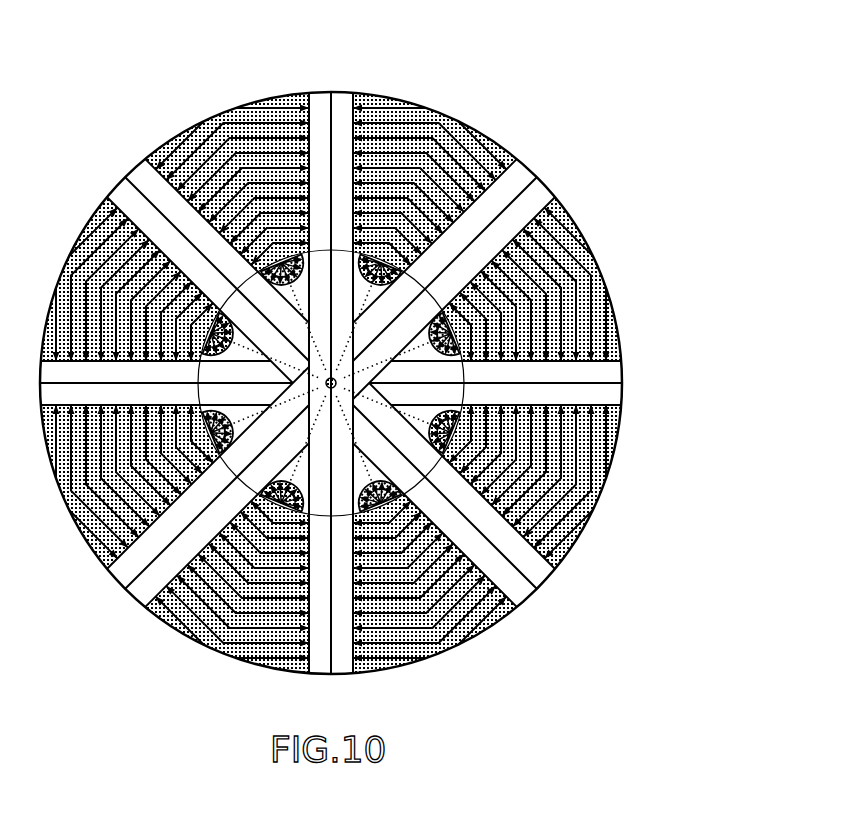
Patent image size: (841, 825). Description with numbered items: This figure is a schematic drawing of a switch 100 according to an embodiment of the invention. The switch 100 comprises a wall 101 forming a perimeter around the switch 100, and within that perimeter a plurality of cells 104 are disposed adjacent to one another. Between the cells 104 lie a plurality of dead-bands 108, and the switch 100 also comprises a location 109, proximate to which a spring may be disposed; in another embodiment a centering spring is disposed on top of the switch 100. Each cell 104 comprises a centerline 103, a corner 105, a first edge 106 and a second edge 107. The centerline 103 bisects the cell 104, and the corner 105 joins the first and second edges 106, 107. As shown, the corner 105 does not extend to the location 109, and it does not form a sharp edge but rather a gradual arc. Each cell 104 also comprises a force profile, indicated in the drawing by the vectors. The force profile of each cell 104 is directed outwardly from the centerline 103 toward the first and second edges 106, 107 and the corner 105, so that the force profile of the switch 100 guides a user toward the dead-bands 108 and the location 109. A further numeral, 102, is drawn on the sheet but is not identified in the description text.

The switch 100 is at (612, 190).
The wall 101 is at (472, 125).
The channel side wall 102 is at (311, 127).
The centerline 103 is at (199, 125).
The cell 104 is at (173, 148).
The corner 105 is at (281, 238).
The first edge 106 is at (320, 124).
The second edge 107 is at (215, 238).
The dead-band 108 is at (610, 382).
The location 109 is at (268, 447).